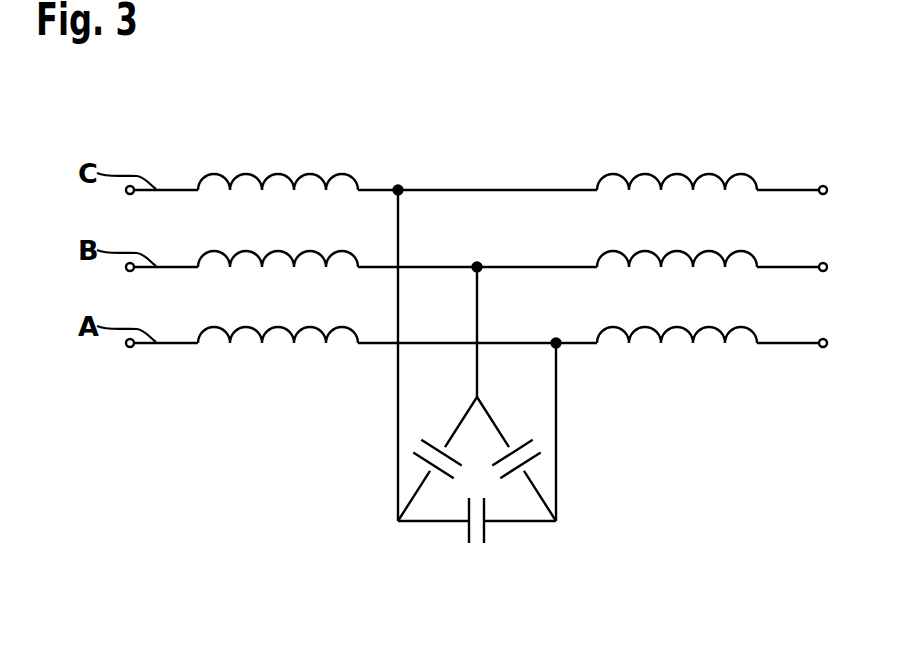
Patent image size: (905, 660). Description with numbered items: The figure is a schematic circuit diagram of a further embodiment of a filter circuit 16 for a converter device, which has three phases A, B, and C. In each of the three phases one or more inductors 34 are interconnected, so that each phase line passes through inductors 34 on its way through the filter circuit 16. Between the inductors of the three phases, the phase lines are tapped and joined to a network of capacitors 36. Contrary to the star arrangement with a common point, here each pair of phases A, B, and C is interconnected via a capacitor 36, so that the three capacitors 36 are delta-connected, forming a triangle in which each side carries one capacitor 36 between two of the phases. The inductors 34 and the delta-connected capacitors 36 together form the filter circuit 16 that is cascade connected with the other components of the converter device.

The filter circuit 16 is at (476, 345).
The inductor 34 is at (278, 396).
The capacitor 36 is at (525, 560).